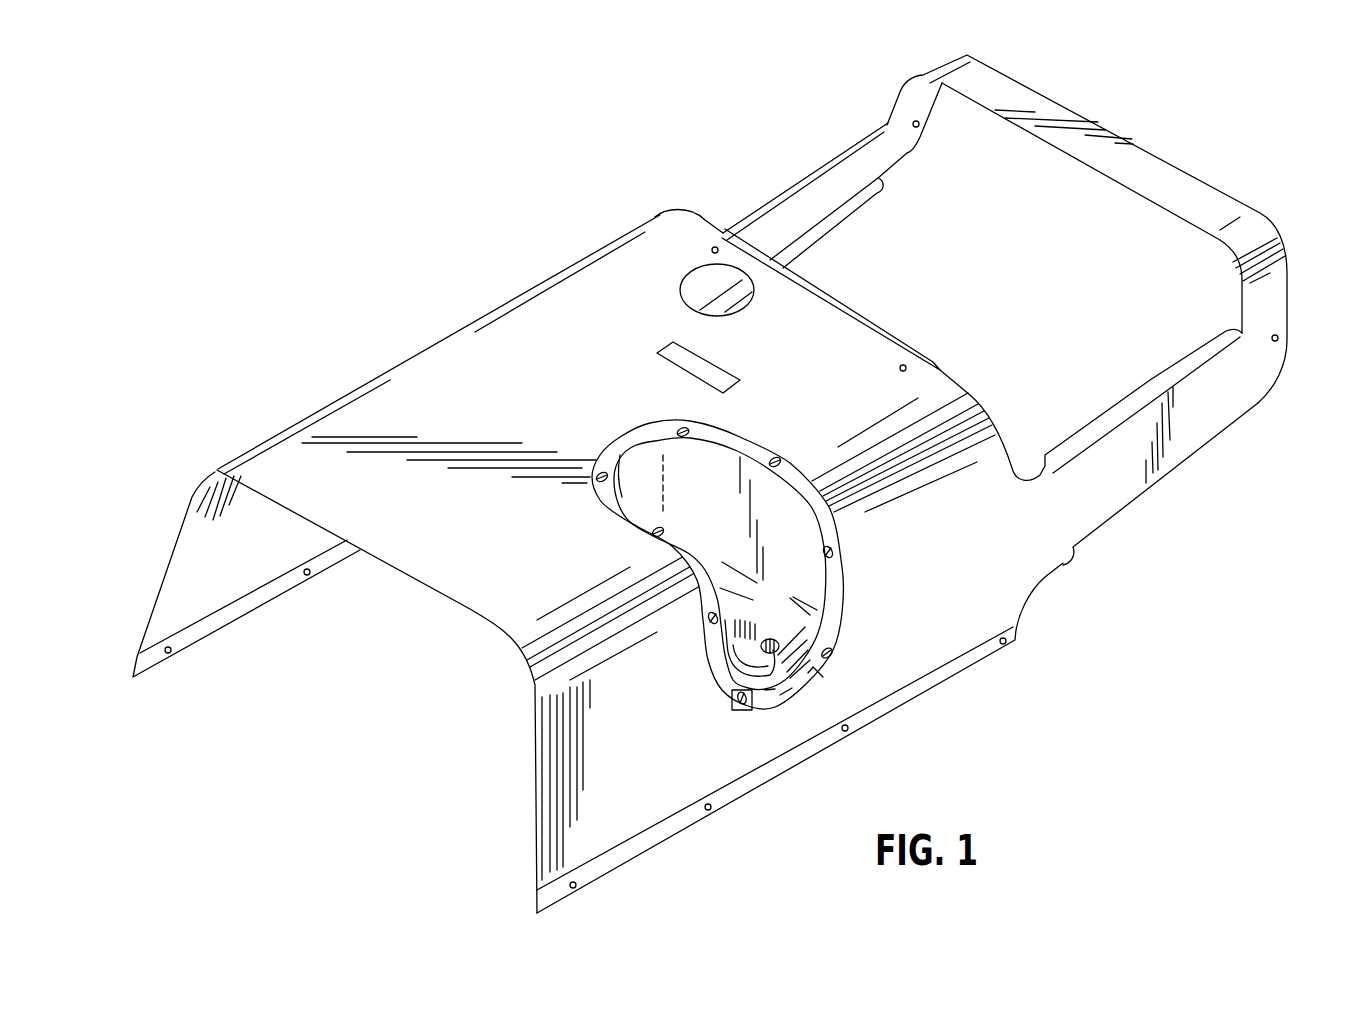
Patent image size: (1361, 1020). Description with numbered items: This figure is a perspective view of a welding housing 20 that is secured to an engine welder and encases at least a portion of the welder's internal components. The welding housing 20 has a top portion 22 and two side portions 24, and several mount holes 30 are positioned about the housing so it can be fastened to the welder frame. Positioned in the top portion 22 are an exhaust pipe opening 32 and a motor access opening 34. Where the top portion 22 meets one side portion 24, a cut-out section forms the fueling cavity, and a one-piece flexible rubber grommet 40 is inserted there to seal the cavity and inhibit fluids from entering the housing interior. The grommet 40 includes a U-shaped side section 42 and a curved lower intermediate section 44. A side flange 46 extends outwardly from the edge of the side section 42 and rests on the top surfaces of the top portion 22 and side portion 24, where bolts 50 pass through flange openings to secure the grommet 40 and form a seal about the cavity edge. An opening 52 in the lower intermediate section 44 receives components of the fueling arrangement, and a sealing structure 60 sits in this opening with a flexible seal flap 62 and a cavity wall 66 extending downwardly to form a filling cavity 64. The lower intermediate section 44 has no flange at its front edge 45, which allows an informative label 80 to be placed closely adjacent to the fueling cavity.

The welding housing 20 is at (532, 268).
The top portion 22 is at (442, 375).
The side portion 24 is at (210, 578).
The mount holes 30 is at (713, 247).
The exhaust pipe opening 32 is at (693, 278).
The motor access opening 34 is at (1090, 205).
The grommet 40 is at (777, 556).
The side section 42 is at (648, 464).
The lower intermediate section 44 is at (769, 689).
The front edge 45 is at (799, 681).
The side flange 46 is at (743, 443).
The bolts 50 is at (601, 471).
The opening 52 is at (727, 640).
The sealing structure 60 is at (780, 645).
The seal flap 62 is at (773, 640).
The filling cavity 64 is at (752, 632).
The cavity wall 66 is at (743, 670).
The informative label 80 is at (787, 699).